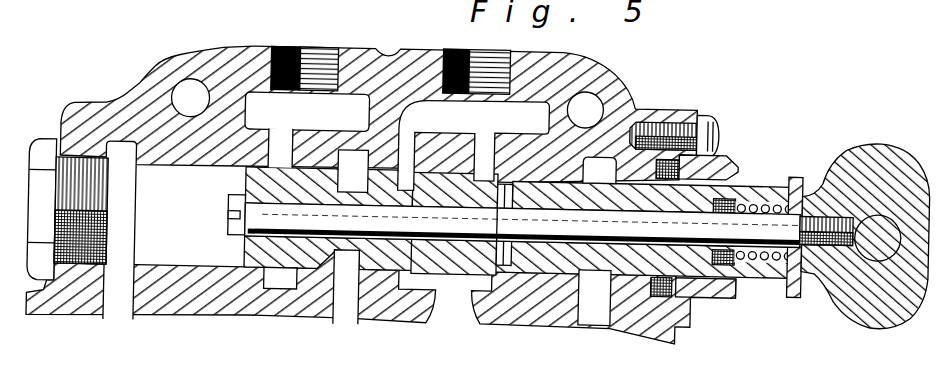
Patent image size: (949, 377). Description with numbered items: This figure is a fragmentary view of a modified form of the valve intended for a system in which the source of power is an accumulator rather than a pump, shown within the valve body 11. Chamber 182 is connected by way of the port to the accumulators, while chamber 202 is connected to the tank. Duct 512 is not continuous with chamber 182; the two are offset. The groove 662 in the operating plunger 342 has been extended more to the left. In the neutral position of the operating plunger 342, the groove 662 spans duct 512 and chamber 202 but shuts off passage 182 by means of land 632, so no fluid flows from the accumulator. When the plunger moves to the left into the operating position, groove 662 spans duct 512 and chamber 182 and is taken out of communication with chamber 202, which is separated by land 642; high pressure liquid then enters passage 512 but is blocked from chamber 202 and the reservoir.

The valve body 11 is at (384, 172).
The chamber 182 is at (307, 112).
The land 632 is at (293, 165).
The duct 512 is at (360, 161).
The chamber 202 is at (474, 146).
The land 642 is at (442, 156).
The groove 662 is at (541, 213).
The operating plunger 342 is at (745, 148).